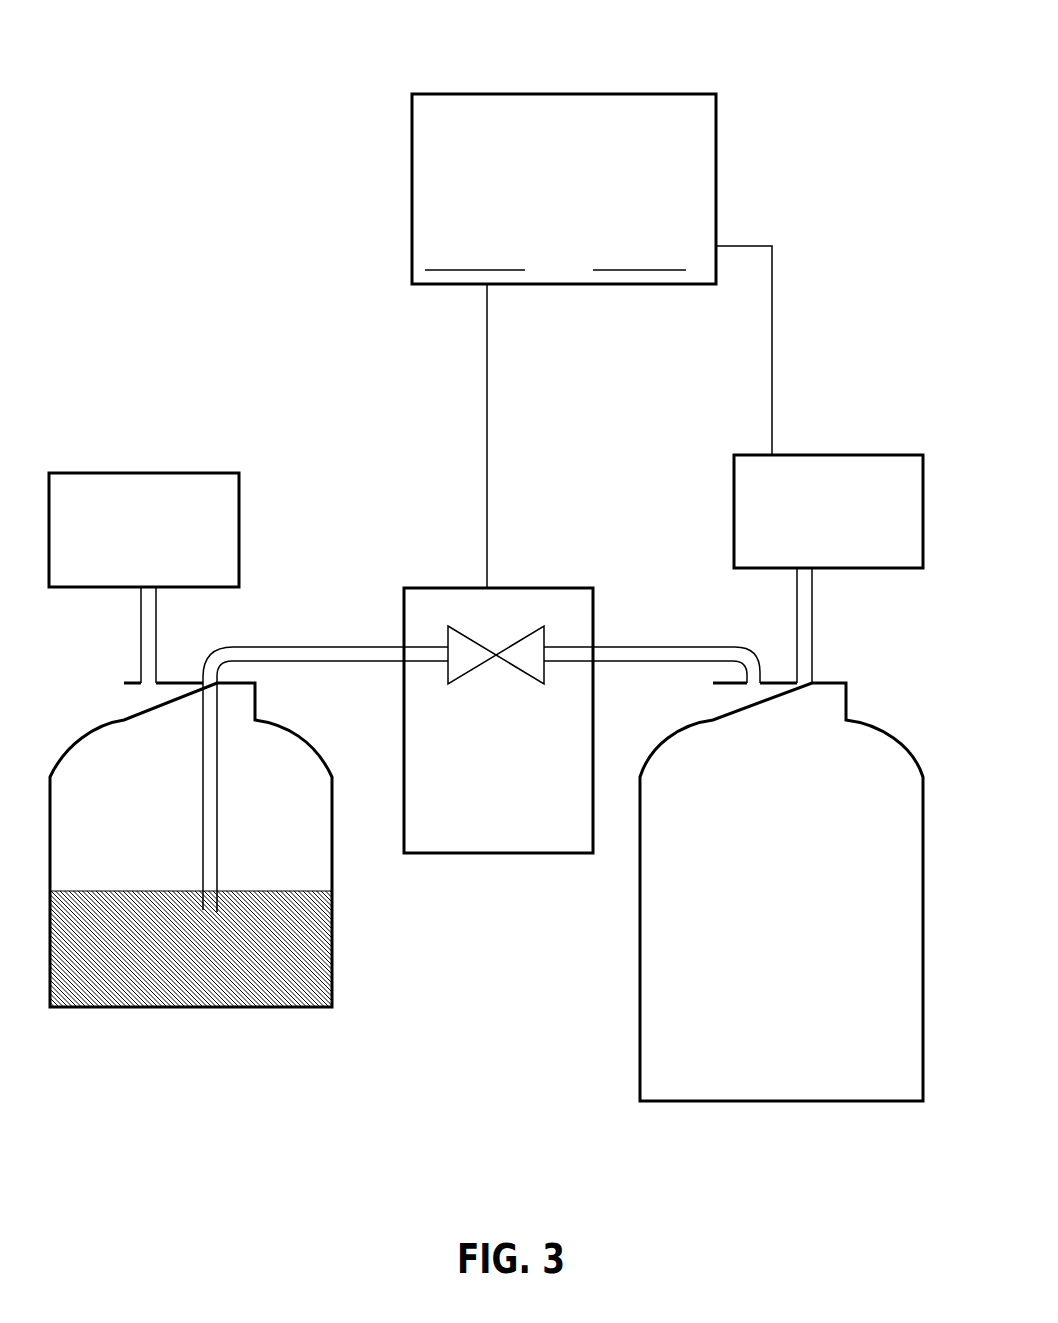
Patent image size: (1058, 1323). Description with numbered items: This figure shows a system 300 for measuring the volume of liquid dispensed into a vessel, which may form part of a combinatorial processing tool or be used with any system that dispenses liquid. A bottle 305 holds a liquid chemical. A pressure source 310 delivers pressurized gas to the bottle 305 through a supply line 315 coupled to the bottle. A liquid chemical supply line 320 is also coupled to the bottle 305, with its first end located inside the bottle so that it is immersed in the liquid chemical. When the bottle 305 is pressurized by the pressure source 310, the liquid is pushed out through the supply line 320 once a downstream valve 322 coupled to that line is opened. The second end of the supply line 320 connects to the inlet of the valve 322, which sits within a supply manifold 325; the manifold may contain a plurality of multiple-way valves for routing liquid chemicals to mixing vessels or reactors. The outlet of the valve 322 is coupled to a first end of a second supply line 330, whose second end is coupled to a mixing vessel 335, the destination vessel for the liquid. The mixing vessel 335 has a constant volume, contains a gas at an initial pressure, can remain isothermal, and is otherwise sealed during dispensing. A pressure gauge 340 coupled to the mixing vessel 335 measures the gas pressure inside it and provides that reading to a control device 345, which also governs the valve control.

The system 300 is at (828, 31).
The bottle 305 is at (332, 965).
The pressure source 310 is at (107, 473).
The supply line 315 is at (157, 633).
The liquid chemical supply line 320 is at (273, 647).
The valve 322 is at (535, 628).
The supply manifold 325 is at (502, 853).
The second supply line 330 is at (625, 645).
The mixing vessel 335 is at (639, 948).
The pressure gauge 340 is at (799, 455).
The control device 345 is at (716, 193).